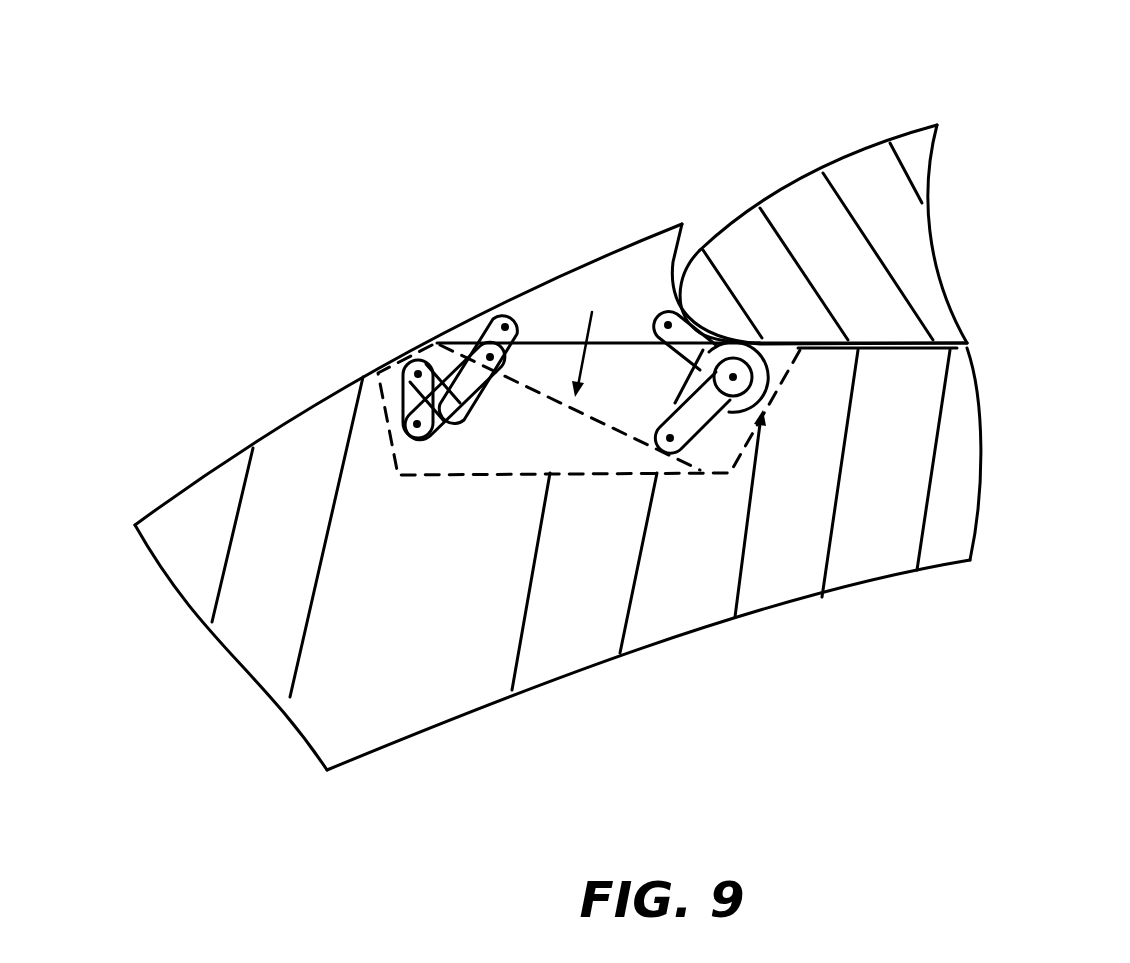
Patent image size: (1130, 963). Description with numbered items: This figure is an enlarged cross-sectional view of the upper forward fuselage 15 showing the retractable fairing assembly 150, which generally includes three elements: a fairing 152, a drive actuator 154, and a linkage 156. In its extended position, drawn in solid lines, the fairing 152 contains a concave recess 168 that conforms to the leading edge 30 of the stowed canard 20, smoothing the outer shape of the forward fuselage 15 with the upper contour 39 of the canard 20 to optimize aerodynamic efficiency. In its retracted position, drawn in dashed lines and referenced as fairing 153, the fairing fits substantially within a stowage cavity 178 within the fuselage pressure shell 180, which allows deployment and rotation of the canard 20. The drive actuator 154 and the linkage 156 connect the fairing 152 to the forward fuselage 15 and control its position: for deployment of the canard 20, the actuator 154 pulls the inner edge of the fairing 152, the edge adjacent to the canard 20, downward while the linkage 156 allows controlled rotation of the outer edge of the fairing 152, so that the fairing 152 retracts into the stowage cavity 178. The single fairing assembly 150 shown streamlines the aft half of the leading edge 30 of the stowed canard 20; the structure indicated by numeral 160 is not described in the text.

The forward fuselage 15 is at (960, 470).
The canard 20 is at (962, 234).
The leading edge 30 is at (803, 217).
The upper surface or contour 39 is at (902, 140).
The retractable fairing assembly 150 is at (439, 303).
The fairing 152 is at (597, 273).
The fairing in retracted position 153 is at (590, 437).
The drive actuator 154 is at (770, 397).
The linkage 156 is at (375, 380).
The leading edge 160 is at (375, 725).
The concave recess 168 is at (677, 257).
The stowage cavity 178 is at (478, 476).
The fuselage pressure shell 180 is at (600, 655).